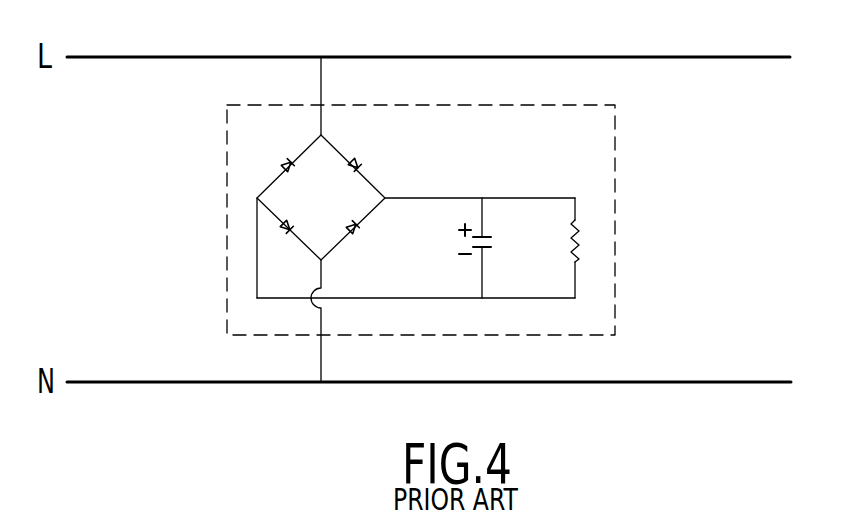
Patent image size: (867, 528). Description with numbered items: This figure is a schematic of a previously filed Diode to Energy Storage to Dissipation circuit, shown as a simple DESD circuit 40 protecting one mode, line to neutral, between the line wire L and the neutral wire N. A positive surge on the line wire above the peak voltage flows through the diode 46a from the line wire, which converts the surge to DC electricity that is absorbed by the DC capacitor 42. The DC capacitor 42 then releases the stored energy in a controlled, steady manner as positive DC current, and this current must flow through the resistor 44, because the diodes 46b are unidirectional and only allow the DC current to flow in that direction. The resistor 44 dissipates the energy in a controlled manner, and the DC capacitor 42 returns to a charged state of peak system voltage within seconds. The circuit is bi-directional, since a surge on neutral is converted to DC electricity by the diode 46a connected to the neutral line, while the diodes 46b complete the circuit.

The DESD circuit 40 is at (617, 162).
The DC capacitor 42 is at (483, 218).
The resistor 44 is at (578, 237).
The diode 46a is at (359, 166).
The diodes 46b is at (287, 164).